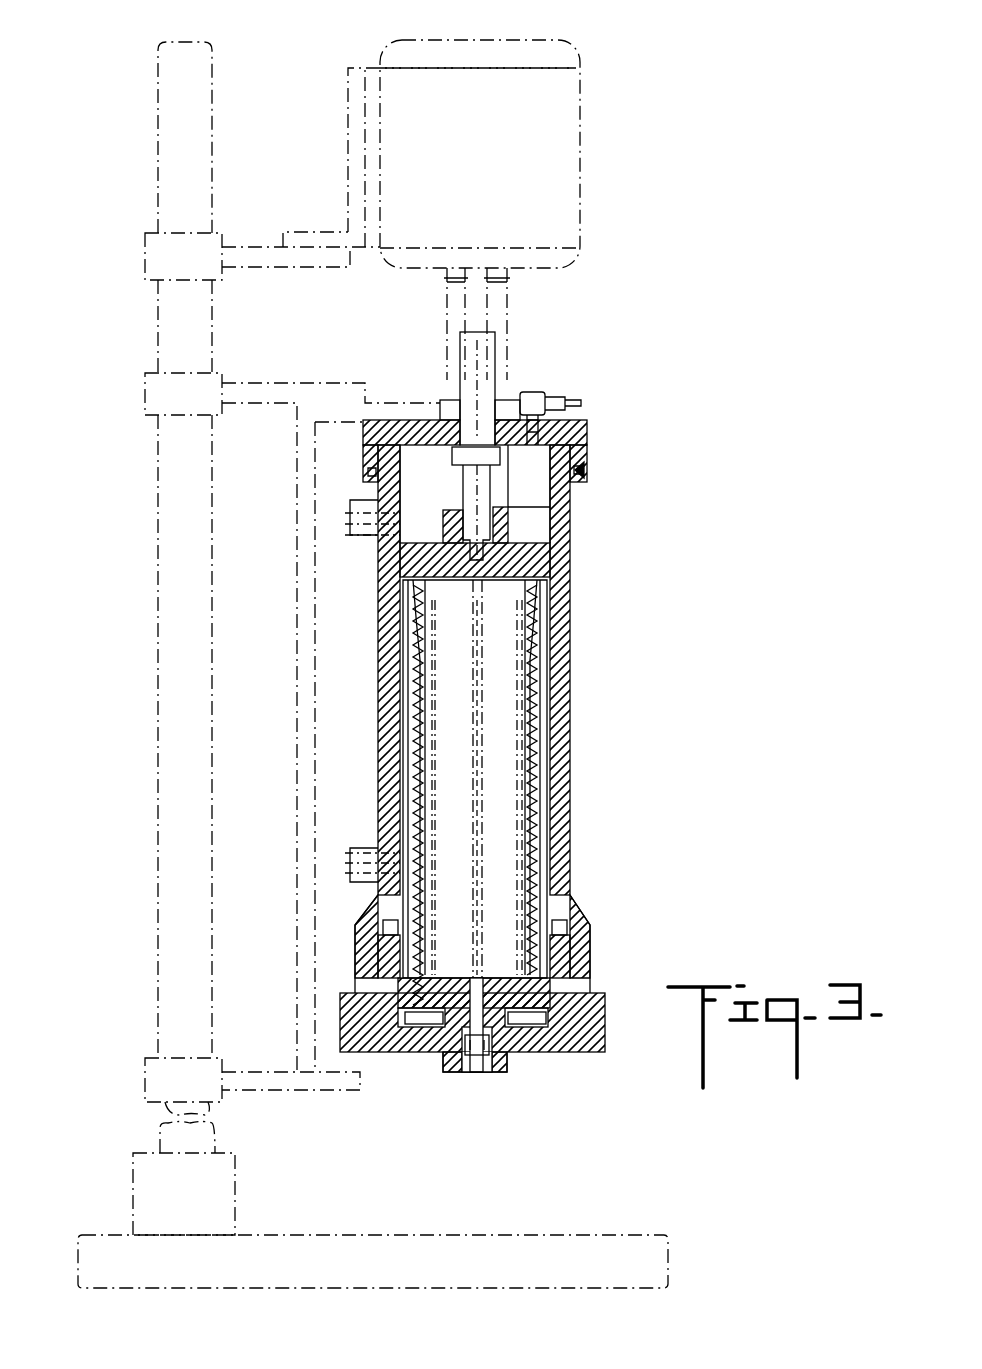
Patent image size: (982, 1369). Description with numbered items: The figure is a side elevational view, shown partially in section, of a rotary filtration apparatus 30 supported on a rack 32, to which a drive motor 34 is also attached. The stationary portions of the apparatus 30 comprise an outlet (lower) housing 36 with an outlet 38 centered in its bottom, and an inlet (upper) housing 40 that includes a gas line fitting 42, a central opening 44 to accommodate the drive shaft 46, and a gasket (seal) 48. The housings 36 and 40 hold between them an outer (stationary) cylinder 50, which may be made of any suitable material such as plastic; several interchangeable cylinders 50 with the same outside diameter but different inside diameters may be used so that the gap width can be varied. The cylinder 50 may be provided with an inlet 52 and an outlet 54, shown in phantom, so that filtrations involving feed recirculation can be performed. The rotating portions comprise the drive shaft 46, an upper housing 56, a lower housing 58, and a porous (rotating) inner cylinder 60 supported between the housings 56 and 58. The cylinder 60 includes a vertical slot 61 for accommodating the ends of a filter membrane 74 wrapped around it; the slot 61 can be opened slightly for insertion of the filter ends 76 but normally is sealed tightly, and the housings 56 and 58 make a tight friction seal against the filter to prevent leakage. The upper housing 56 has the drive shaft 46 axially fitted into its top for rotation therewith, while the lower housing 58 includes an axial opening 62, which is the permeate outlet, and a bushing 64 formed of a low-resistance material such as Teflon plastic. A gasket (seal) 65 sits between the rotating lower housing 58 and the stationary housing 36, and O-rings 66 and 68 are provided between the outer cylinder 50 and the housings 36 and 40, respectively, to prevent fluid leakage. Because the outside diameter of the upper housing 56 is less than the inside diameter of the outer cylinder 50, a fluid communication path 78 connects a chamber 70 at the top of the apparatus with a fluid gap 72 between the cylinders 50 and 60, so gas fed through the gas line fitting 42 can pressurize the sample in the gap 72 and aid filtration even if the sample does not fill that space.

The apparatus 30 is at (589, 675).
The rack 32 is at (162, 672).
The drive motor 34 is at (471, 159).
The outlet (lower) housing 36 is at (575, 1050).
The outlet 38 is at (458, 1072).
The inlet (upper) housing 40 is at (380, 418).
The gas line fitting 42 is at (547, 396).
The central opening 44 is at (462, 399).
The drive shaft 46 is at (470, 346).
The gasket (seal) 48 is at (585, 442).
The outer (stationary) cylinder 50 is at (384, 656).
The inlet 52 is at (364, 503).
The outlet 54 is at (365, 876).
The upper housing 56 is at (440, 548).
The lower housing 58 is at (520, 1045).
The porous (rotating) inner cylinder 60 is at (530, 800).
The vertical slot 61 is at (540, 614).
The axial opening 62 is at (487, 1075).
The bushing 64 is at (405, 1050).
The gasket (seal) 65 is at (548, 942).
The O-ring 66 is at (575, 918).
The O-ring 68 is at (585, 470).
The chamber 70 is at (530, 501).
The fluid gap 72 is at (410, 750).
The filter membrane 74 is at (545, 718).
The filter ends 76 is at (480, 850).
The fluid communication path 78 is at (405, 586).